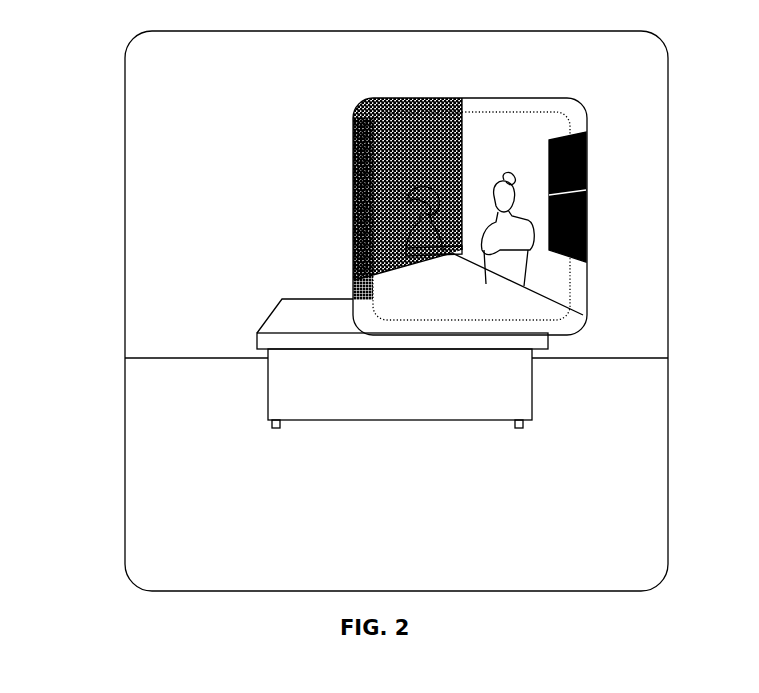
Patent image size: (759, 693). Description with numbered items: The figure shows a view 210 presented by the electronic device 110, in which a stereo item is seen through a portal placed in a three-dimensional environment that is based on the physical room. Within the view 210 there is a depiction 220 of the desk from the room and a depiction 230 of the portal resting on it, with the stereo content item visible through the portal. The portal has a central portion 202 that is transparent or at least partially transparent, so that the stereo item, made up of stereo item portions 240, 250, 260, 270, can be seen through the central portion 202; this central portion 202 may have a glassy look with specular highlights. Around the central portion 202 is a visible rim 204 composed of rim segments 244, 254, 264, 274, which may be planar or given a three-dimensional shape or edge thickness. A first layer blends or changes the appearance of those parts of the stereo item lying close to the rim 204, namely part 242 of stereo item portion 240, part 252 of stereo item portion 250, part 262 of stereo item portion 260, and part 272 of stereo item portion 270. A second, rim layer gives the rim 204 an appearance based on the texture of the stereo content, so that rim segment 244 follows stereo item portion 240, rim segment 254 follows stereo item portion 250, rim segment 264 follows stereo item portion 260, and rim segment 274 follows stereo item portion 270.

The electronic device 110 is at (200, 72).
The view 210 is at (108, 108).
The depiction of the desk 220 is at (284, 424).
The depiction of the portal 230 is at (437, 189).
The stereo item portion 240 is at (430, 114).
The part of stereo item portion 242 is at (362, 130).
The rim segment 244 is at (352, 190).
The rim 204 is at (352, 234).
The stereo item portion 250 is at (503, 118).
The part of stereo item portion 252 is at (556, 100).
The rim segment 254 is at (585, 108).
The stereo item portion 260 is at (565, 217).
The part of stereo item portion 262 is at (587, 262).
The rim segment 264 is at (587, 190).
The stereo item portion 270 is at (383, 302).
The part of stereo item portion 272 is at (555, 340).
The rim segment 274 is at (568, 336).
The central portion 202 is at (446, 292).